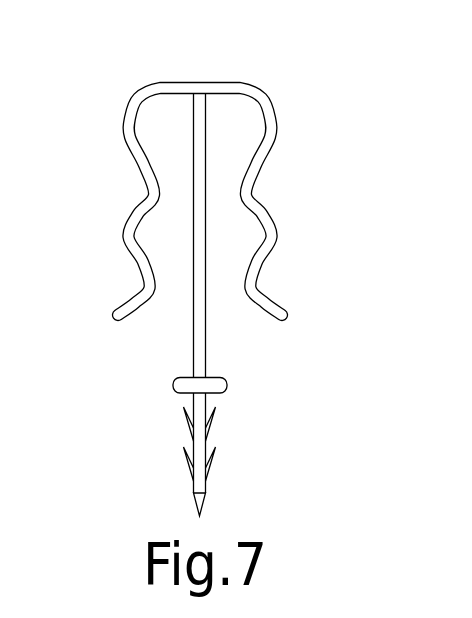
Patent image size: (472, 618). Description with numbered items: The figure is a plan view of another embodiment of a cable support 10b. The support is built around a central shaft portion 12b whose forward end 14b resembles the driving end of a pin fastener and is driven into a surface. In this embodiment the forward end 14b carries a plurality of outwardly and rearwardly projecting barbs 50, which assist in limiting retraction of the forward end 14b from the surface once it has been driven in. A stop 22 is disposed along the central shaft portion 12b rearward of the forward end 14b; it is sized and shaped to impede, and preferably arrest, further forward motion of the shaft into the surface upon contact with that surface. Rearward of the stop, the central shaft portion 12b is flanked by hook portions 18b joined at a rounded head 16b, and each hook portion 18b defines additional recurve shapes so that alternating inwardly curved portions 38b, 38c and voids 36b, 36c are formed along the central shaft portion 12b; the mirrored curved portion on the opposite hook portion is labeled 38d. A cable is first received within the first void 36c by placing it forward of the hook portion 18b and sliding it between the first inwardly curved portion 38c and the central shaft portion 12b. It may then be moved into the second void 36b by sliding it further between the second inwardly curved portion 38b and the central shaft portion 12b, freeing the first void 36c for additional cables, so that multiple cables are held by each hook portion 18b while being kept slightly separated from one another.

The cable support 10b is at (92, 97).
The central shaft portion 12b is at (228, 348).
The forward end 14b is at (230, 470).
The head loop 16b is at (210, 60).
The hook portion 18b is at (150, 84).
The stop 22 is at (178, 383).
The second void 36b is at (181, 135).
The first void 36c is at (148, 247).
The second inwardly curved portion 38b is at (148, 190).
The first inwardly curved portion 38c is at (140, 290).
The upper curved portion of arm 38d is at (248, 182).
The barbs 50 is at (188, 458).